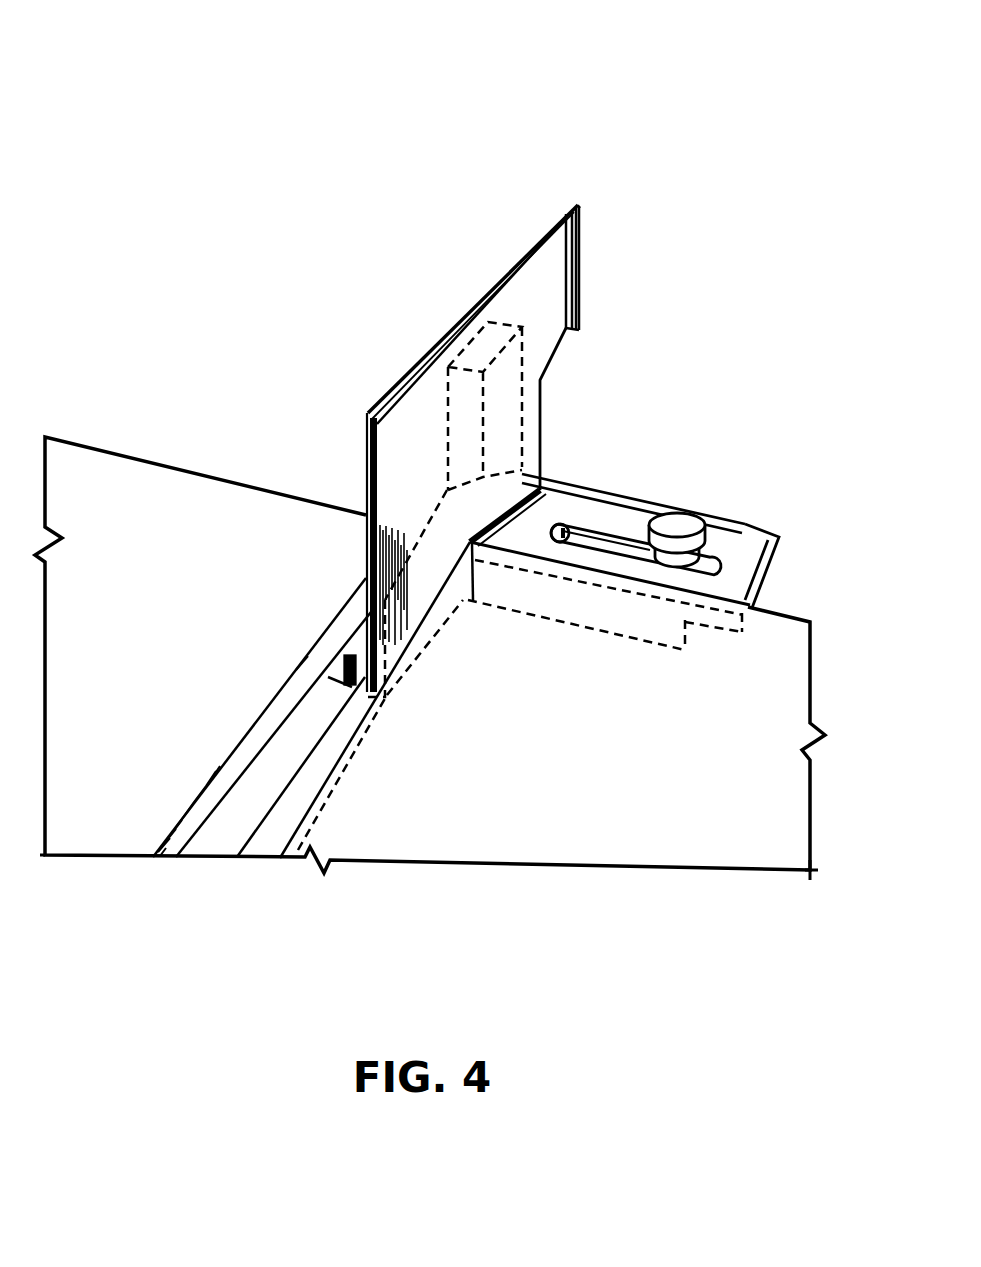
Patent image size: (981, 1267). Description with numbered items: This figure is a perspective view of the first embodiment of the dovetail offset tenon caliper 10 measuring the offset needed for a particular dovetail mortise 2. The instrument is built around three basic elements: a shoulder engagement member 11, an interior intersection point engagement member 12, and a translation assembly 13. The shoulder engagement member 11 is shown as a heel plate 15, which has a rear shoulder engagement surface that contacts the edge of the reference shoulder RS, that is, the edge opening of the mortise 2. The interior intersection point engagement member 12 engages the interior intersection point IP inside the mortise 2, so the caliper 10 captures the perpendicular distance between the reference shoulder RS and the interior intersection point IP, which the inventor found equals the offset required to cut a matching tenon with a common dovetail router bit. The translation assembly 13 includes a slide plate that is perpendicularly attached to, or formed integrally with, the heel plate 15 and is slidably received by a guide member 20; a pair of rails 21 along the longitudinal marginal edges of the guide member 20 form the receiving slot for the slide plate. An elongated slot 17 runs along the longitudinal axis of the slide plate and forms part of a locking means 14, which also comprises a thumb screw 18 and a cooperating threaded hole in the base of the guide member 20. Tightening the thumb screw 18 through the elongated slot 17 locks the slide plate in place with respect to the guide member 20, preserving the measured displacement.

The dovetail offset tenon caliper 10 is at (365, 278).
The dovetail mortise 2 is at (281, 752).
The shoulder engagement member 11 is at (553, 295).
The interior intersection point engagement member 12 is at (330, 670).
The translation assembly 13 is at (612, 532).
The locking means 14 is at (753, 535).
The heel plate 15 is at (470, 300).
The elongated slot 17 is at (574, 535).
The thumb screw 18 is at (678, 522).
The guide member 20 is at (660, 504).
The rails 21 is at (720, 549).
The interior intersection point IP is at (300, 674).
The reference shoulder RS is at (380, 652).